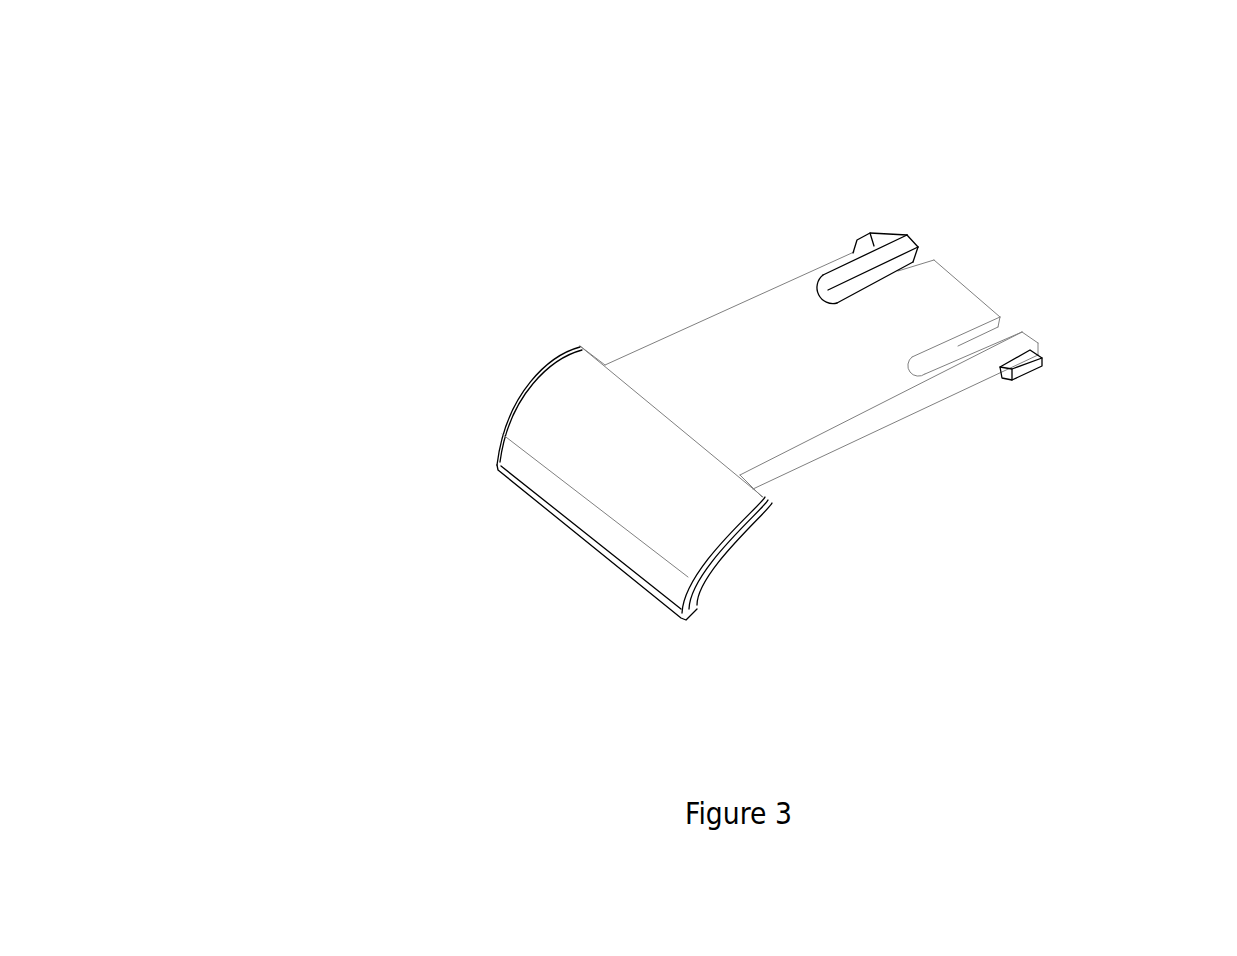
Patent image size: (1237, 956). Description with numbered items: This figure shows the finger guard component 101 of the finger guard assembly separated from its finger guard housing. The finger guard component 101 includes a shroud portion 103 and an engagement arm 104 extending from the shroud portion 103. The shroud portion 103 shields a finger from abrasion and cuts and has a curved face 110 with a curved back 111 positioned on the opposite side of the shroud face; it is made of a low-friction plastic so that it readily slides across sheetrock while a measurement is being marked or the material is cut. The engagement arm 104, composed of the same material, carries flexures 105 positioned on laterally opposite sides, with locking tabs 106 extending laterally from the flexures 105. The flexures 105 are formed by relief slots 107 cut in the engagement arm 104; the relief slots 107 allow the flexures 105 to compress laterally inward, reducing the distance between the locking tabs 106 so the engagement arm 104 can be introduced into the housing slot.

The finger guard component 101 is at (398, 174).
The shroud portion 103 is at (763, 510).
The engagement arm 104 is at (775, 400).
The flexures 105 is at (822, 275).
The locking tabs 106 is at (866, 242).
The relief slots 107 is at (832, 294).
The curved face 110 is at (607, 467).
The curved back 111 is at (705, 568).